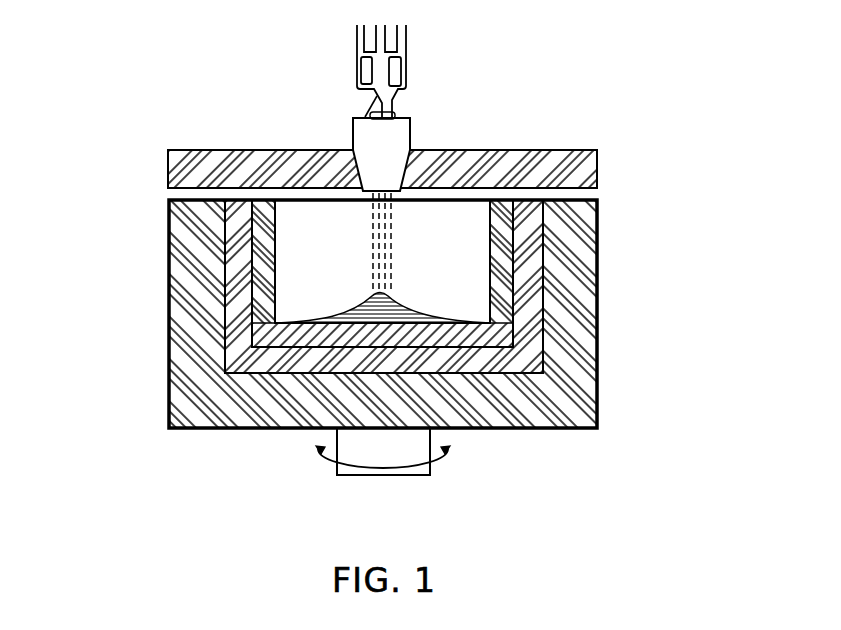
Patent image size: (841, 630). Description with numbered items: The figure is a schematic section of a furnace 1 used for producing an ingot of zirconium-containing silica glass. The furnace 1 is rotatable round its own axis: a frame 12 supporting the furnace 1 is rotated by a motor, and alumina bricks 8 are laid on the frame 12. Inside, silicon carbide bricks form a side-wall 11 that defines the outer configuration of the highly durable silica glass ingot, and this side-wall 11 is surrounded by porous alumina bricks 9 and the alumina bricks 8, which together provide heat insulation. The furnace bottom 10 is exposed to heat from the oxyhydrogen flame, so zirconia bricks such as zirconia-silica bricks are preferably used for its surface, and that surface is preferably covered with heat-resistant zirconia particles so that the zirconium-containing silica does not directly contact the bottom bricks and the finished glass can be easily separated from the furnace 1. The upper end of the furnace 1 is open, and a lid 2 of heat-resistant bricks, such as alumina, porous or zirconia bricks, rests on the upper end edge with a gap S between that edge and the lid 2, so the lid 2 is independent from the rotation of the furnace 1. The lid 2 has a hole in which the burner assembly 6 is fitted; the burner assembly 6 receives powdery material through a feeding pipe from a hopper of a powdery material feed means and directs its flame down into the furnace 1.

The furnace 1 is at (135, 137).
The lid 2 is at (285, 150).
The burner assembly 6 is at (410, 116).
The gap S is at (167, 195).
The alumina bricks 8 is at (575, 358).
The porous alumina bricks 9 is at (237, 284).
The furnace bottom 10 is at (506, 332).
The side-wall 11 is at (277, 260).
The frame 12 is at (597, 278).